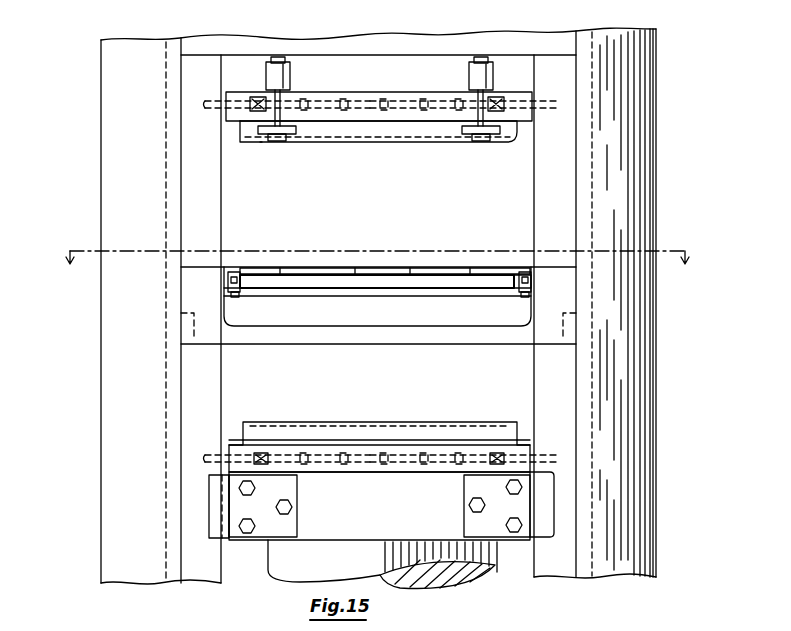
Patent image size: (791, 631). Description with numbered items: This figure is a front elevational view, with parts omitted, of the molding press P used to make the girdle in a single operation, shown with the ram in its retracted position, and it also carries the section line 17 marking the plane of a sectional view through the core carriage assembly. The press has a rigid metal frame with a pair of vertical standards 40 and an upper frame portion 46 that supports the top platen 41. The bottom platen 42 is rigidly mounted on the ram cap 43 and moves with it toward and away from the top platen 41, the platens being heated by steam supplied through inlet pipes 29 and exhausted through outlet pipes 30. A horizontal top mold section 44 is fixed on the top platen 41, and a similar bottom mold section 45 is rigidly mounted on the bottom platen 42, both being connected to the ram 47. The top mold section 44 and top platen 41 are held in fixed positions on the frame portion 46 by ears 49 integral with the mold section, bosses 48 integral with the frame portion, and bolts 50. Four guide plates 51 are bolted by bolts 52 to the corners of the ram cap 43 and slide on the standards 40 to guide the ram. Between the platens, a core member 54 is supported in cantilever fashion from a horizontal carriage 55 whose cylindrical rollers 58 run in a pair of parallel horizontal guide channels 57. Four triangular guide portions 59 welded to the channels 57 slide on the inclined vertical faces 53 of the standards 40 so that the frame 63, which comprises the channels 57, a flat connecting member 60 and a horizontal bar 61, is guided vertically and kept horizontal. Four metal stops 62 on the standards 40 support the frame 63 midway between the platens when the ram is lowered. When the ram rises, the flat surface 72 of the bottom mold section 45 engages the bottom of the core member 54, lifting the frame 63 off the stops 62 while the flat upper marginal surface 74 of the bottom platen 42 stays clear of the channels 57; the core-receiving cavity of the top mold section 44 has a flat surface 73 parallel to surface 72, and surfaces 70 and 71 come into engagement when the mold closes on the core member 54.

The section line 17 is at (376, 253).
The inlet pipes 29 is at (213, 104).
The outlet pipes 30 is at (546, 103).
The vertical standards 40 is at (100, 345).
The top platen 41 is at (357, 95).
The bottom platen 42 is at (438, 445).
The ram cap 43 is at (338, 532).
The top mold section 44 is at (407, 128).
The bottom mold section 45 is at (400, 420).
The upper frame portion 46 is at (418, 57).
The ram 47 is at (300, 580).
The bosses 48 is at (291, 78).
The ears 49 is at (291, 141).
The bolts 50 is at (262, 100).
The guide plates 51 is at (213, 520).
The bolts 52 is at (257, 488).
The inclined vertical faces 53 is at (181, 210).
The core member 54 is at (418, 268).
The carriage 55 is at (420, 290).
The guide channels 57 is at (233, 268).
The cylindrical rollers 58 is at (240, 297).
The triangular guide portions 59 is at (188, 290).
The connecting member 60 is at (318, 345).
The horizontal bar 61 is at (280, 268).
The stops 62 is at (195, 340).
The frame 63 is at (330, 298).
The surface 70 is at (265, 422).
The surface 71 is at (249, 148).
The flat surface 72 is at (380, 426).
The flat horizontal surface 73 is at (346, 145).
The flat upper marginal surface 74 is at (232, 440).
The press P is at (90, 119).